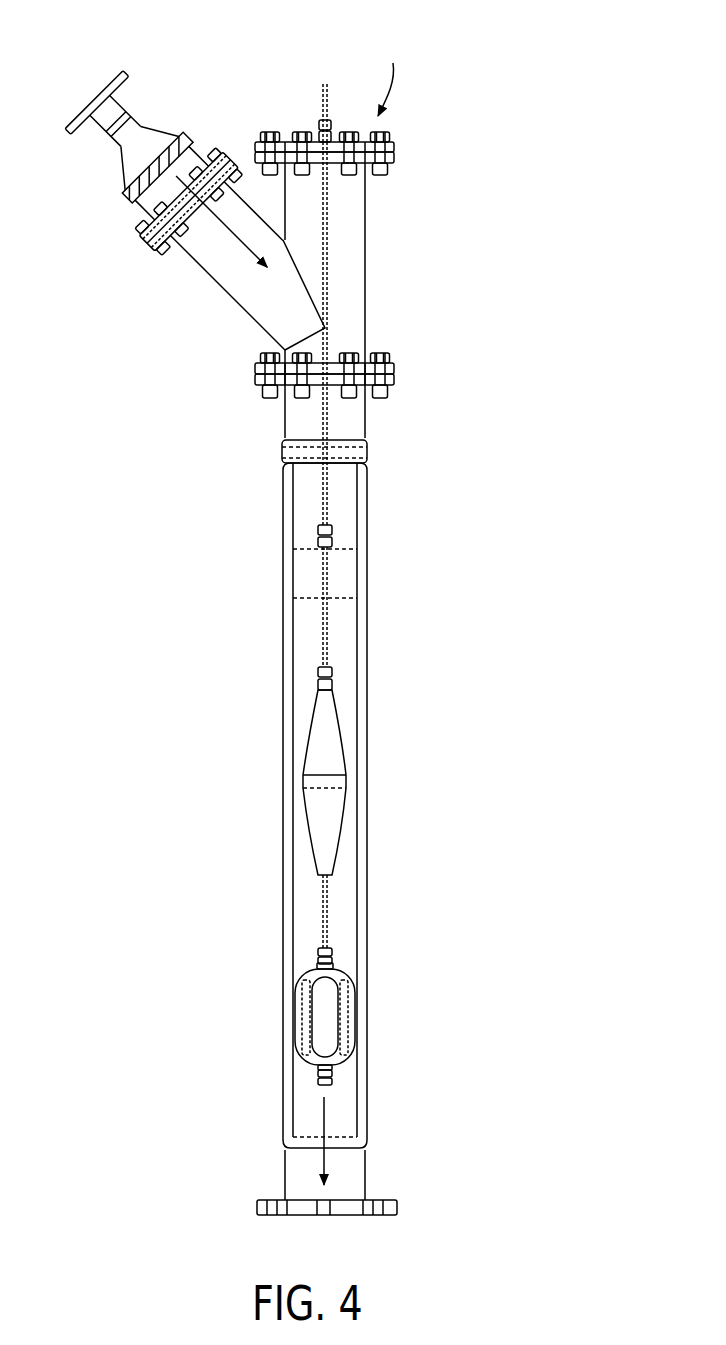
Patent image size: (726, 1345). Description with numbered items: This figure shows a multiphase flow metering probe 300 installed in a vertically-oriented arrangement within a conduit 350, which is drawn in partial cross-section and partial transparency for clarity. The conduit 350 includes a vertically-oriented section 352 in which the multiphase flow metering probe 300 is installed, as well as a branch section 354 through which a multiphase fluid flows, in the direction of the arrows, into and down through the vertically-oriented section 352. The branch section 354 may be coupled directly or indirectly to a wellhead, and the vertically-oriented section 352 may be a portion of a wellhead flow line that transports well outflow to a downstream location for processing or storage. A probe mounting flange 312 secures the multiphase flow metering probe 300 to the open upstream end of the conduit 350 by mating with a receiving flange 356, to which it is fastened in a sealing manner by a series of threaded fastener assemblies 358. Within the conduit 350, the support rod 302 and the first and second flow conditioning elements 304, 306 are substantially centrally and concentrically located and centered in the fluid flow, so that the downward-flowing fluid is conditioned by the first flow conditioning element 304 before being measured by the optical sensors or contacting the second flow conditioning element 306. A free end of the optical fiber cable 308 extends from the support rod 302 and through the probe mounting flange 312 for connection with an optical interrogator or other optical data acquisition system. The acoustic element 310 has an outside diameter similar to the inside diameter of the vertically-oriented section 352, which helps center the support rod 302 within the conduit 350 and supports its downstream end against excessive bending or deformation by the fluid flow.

The multiphase flow metering probe 300 is at (311, 666).
The support rod 302 is at (329, 502).
The first flow conditioning element 304 is at (344, 572).
The second flow conditioning element 306 is at (339, 770).
The optical fiber cable 308 is at (321, 98).
The acoustic element 310 is at (352, 1018).
The probe mounting flange 312 is at (396, 145).
The conduit 350 is at (384, 318).
The vertically-oriented section 352 is at (282, 507).
The branch section 354 is at (140, 162).
The receiving flange 356 is at (396, 164).
The threaded fastener assemblies 358 is at (392, 72).